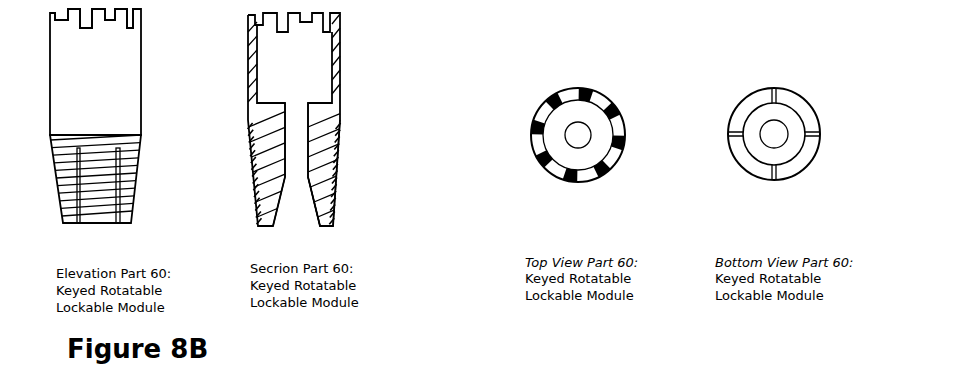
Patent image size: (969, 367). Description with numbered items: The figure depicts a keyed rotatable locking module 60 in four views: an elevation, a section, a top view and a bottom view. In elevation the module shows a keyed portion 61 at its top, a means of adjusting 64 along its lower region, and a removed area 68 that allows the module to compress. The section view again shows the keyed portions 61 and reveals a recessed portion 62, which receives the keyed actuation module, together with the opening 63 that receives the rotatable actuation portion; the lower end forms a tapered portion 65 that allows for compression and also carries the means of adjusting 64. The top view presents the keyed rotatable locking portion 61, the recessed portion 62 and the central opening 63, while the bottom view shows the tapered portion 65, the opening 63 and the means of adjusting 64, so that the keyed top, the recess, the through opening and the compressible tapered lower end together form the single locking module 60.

The keyed rotatable locking module 60 is at (330, 117).
The keyed portion 61 is at (255, 27).
The recessed portion 62 is at (320, 58).
The opening 63 is at (302, 135).
The means of adjusting 64 is at (258, 160).
The tapered portion 65 is at (315, 192).
The removed area 68 is at (130, 216).